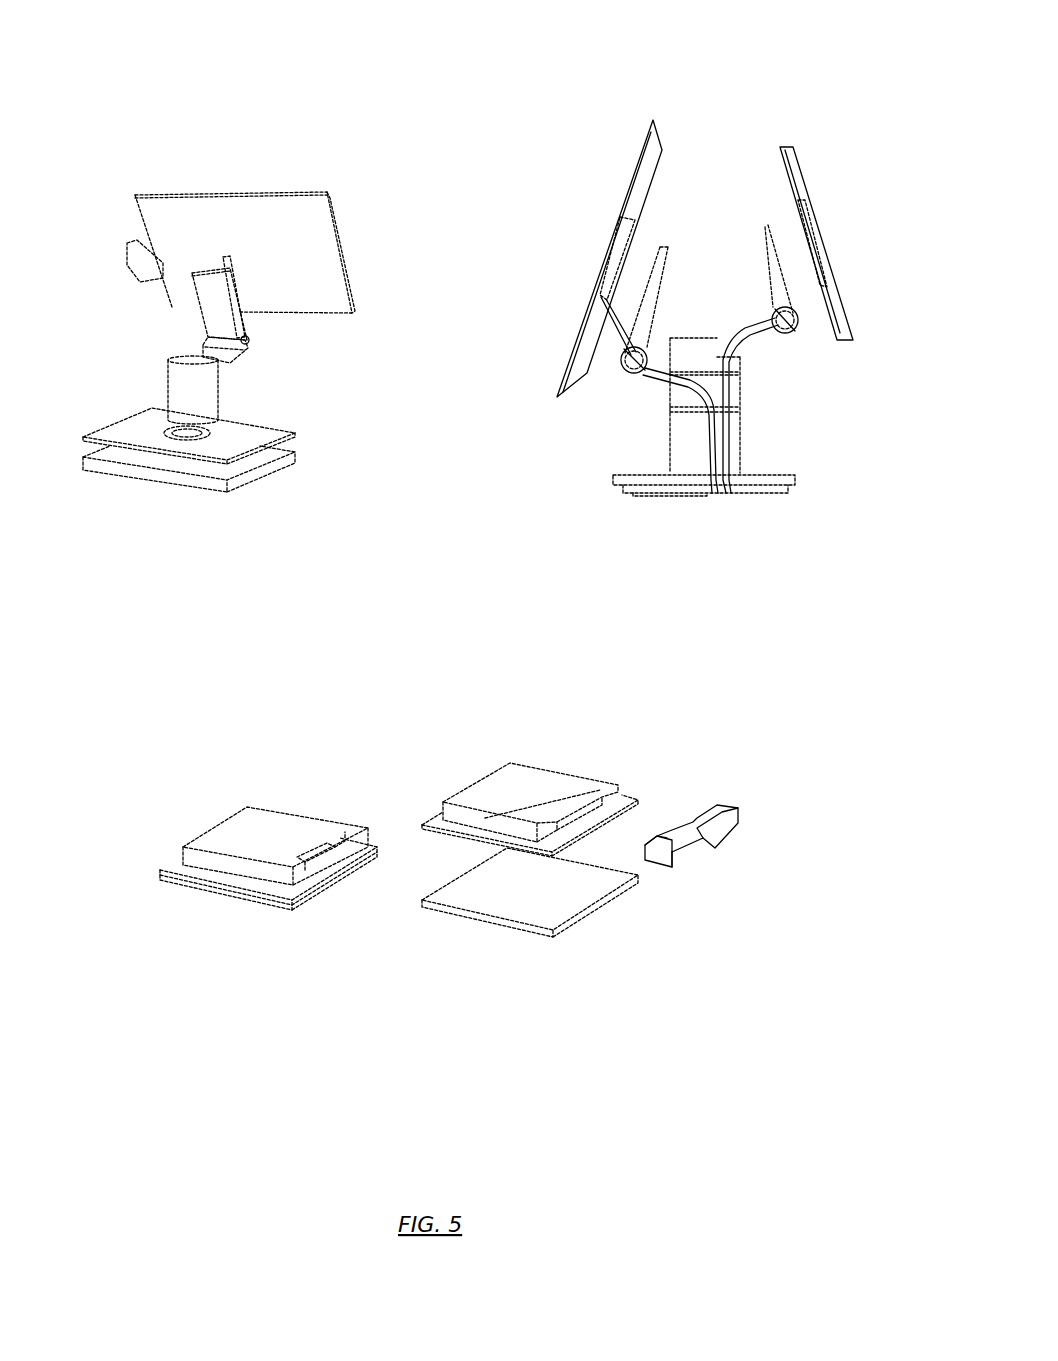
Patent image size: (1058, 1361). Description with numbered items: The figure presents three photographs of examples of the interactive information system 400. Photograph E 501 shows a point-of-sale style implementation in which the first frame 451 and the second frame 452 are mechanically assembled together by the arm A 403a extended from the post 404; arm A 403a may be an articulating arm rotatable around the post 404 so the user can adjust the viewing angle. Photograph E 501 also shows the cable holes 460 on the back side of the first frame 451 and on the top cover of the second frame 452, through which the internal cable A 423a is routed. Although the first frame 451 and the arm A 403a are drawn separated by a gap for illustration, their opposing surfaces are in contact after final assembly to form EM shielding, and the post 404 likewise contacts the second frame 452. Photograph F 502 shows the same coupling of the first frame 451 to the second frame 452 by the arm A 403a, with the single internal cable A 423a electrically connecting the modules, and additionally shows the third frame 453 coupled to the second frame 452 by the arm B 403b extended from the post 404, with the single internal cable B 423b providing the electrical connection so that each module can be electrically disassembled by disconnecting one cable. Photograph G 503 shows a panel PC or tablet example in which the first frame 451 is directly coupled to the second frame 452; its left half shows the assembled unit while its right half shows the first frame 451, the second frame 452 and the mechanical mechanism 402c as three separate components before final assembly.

The interactive information system 400 is at (680, 65).
The first frame 451 is at (257, 160).
The second frame 452 is at (263, 480).
The third frame 453 is at (638, 138).
The cable holes 460 is at (257, 233).
The arm A 403a is at (238, 298).
The arm B 403b is at (668, 267).
The post 404 is at (173, 357).
The internal cable A 423a is at (723, 397).
The internal cable B 423b is at (707, 437).
The mechanical mechanism 402c is at (722, 802).
The photograph E 501 is at (157, 548).
The photograph F 502 is at (647, 553).
The photograph G 503 is at (252, 972).